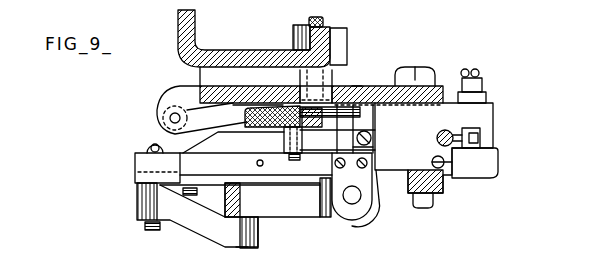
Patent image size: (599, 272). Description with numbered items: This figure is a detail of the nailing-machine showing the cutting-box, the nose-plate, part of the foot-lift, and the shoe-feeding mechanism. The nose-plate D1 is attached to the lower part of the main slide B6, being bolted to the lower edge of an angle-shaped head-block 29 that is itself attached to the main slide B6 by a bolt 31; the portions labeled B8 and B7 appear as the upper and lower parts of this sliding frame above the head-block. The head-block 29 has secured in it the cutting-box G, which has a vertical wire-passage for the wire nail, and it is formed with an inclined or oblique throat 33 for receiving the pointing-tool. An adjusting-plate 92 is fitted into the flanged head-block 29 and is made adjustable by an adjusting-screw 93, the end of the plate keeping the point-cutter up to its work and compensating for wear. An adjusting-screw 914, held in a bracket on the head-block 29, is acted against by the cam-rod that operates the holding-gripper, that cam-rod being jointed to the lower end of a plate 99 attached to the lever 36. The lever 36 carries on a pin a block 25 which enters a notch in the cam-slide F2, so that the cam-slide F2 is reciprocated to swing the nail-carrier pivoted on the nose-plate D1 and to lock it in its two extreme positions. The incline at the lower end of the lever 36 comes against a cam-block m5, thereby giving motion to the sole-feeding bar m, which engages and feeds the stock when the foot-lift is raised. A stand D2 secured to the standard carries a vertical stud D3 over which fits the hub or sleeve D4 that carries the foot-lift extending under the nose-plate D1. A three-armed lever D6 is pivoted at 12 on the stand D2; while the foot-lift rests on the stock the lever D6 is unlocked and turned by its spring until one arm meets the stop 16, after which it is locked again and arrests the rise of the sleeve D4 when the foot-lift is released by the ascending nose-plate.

The upper frame portion B8 is at (297, 44).
The frame bar left portion B7 is at (303, 71).
The main slide B6 is at (440, 86).
The adjusting-screw 93 is at (352, 86).
The bolt 31 is at (420, 75).
The adjusting-screw 914 is at (473, 78).
The angle-shaped head-block 29 is at (488, 111).
The cutting-box G is at (486, 141).
The inclined or oblique throat 33 is at (430, 157).
The nose-plate D1 is at (491, 164).
The plate 99 is at (337, 118).
The cam-slide F2 is at (337, 129).
The adjusting-plate 92 is at (371, 145).
The lever 36 is at (246, 124).
The block 25 is at (278, 138).
The stand D2 is at (157, 121).
The cam-block m5 is at (250, 140).
The sole-feeding bar m is at (233, 163).
The pivot 12 is at (241, 250).
The three-armed lever D6 is at (272, 200).
The stop 16 is at (325, 206).
The vertical stud D3 is at (352, 206).
The hub or sleeve D4 is at (375, 210).